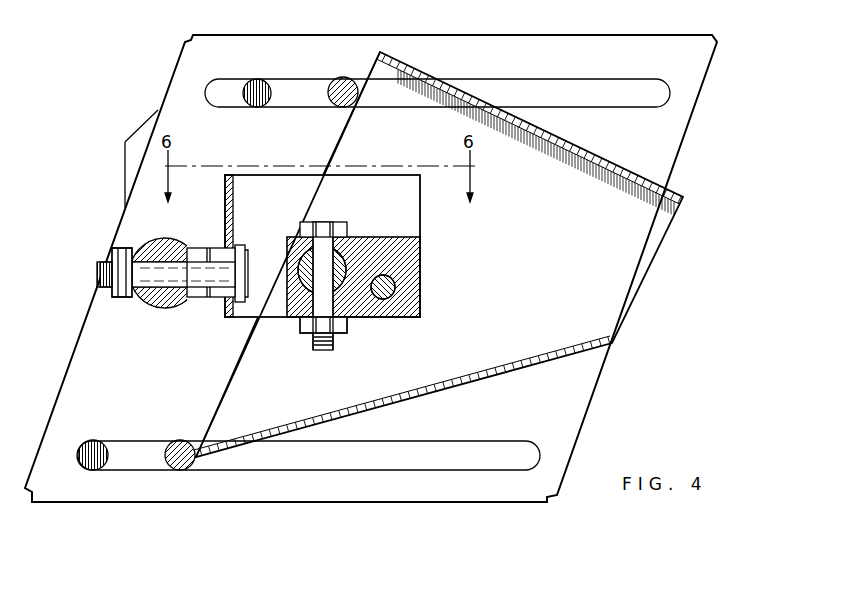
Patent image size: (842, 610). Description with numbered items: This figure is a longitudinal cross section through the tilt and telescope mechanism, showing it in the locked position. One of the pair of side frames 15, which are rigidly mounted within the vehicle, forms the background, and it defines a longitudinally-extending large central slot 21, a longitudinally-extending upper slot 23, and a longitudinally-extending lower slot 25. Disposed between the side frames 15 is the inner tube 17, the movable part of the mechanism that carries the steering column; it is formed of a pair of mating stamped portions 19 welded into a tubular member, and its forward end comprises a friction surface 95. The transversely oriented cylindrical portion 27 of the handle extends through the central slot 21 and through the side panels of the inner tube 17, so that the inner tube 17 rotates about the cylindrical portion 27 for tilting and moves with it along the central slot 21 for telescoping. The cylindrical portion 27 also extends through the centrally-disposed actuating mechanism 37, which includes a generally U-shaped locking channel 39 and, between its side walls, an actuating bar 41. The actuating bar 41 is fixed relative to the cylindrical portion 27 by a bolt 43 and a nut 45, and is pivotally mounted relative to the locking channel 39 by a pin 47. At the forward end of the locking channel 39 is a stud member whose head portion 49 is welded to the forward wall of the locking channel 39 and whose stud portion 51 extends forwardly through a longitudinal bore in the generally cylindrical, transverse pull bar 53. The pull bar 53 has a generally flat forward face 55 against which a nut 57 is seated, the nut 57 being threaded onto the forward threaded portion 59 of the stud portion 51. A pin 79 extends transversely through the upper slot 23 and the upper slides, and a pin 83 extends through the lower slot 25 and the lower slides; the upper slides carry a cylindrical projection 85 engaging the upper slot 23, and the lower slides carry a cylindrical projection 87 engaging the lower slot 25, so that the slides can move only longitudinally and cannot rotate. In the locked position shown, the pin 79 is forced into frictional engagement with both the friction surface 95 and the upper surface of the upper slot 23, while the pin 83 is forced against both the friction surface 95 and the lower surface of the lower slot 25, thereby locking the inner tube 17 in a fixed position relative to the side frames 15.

The side frame 15 is at (322, 48).
The inner tube 17 is at (668, 255).
The stamped portion 19 is at (600, 158).
The central slot 21 is at (215, 248).
The upper slot 23 is at (580, 82).
The lower slot 25 is at (458, 446).
The cylindrical portion 27 is at (337, 276).
The actuating mechanism 37 is at (440, 288).
The locking channel 39 is at (410, 215).
The actuating bar 41 is at (418, 250).
The bolt 43 is at (322, 222).
The nut 45 is at (300, 330).
The pin 47 is at (383, 300).
The head portion 49 is at (248, 255).
The stud portion 51 is at (162, 280).
The pull bar 53 is at (165, 240).
The forward face 55 is at (120, 248).
The nut 57 is at (124, 298).
The threaded portion 59 is at (97, 273).
The pin 79 is at (345, 78).
The pin 83 is at (187, 442).
The cylindrical projection 85 is at (252, 88).
The cylindrical projection 87 is at (95, 442).
The friction surface 95 is at (338, 126).